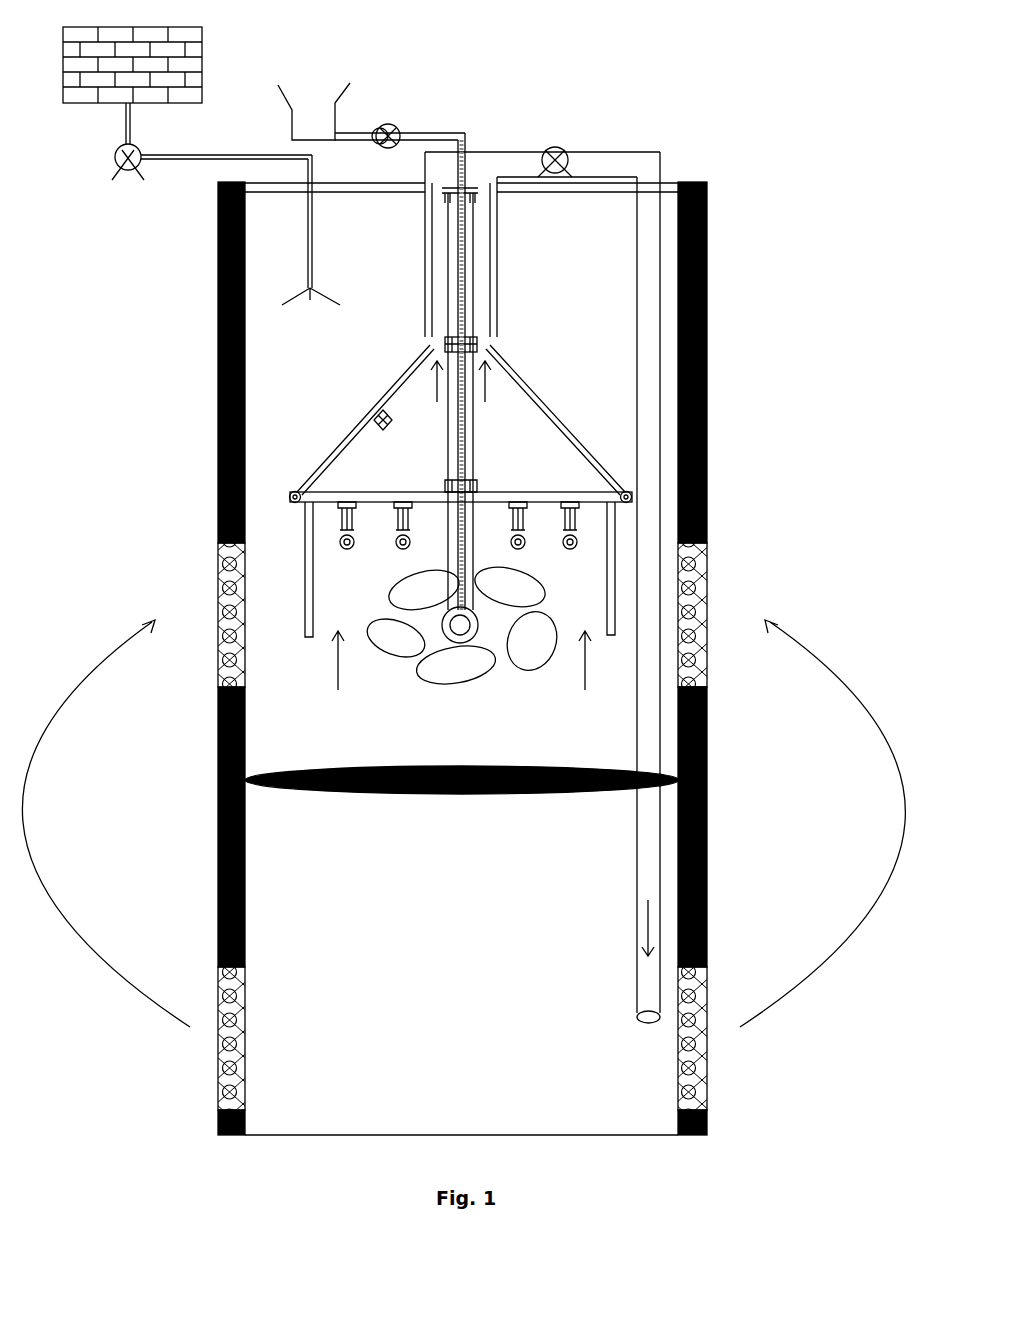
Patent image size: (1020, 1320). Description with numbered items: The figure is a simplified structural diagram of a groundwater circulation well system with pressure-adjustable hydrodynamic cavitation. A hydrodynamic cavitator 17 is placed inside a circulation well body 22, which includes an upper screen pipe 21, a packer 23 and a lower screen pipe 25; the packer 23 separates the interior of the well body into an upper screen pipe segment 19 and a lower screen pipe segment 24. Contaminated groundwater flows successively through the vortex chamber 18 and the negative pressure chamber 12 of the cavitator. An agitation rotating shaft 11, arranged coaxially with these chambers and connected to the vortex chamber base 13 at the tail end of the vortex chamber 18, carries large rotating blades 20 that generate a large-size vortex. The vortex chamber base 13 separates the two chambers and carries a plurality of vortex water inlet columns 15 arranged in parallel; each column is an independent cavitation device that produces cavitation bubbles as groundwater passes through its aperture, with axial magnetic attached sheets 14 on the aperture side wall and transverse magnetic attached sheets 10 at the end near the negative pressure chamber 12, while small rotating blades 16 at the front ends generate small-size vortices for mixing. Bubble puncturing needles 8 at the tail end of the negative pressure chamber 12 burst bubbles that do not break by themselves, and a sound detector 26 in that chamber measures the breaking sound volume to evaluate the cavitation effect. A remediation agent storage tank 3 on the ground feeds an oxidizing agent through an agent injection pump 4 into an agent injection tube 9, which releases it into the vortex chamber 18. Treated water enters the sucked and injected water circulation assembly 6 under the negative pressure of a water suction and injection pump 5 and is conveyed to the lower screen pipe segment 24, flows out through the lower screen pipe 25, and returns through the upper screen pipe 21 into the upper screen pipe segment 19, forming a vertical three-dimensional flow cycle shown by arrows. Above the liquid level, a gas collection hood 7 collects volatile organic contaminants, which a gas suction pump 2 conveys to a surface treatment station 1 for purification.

The surface treatment station 1 is at (205, 75).
The gas suction pump 2 is at (116, 160).
The remediation agent storage tank 3 is at (288, 122).
The agent injection pump 4 is at (396, 128).
The water suction and injection pump 5 is at (568, 152).
The sucked and injected water circulation assembly 6 is at (692, 134).
The gas collection hood 7 is at (282, 305).
The bubble puncturing needle 8 is at (490, 342).
The agent injection tube 9 is at (467, 400).
The transverse magnetic attached sheet 10 is at (310, 485).
The agitation rotating shaft 11 is at (475, 443).
The negative pressure chamber 12 is at (543, 462).
The vortex chamber base 13 is at (628, 497).
The axial magnetic attached sheet 14 is at (340, 528).
The vortex water inlet column 15 is at (580, 520).
The small rotating blade 16 is at (560, 548).
The hydrodynamic cavitator 17 is at (303, 560).
The vortex chamber 18 is at (595, 585).
The upper screen pipe segment 19 is at (268, 618).
The large rotating blade 20 is at (545, 662).
The upper screen pipe 21 is at (707, 685).
The circulation well body 22 is at (215, 778).
The packer 23 is at (680, 786).
The lower screen pipe segment 24 is at (300, 912).
The lower screen pipe 25 is at (235, 1035).
The sound detector 26 is at (376, 418).